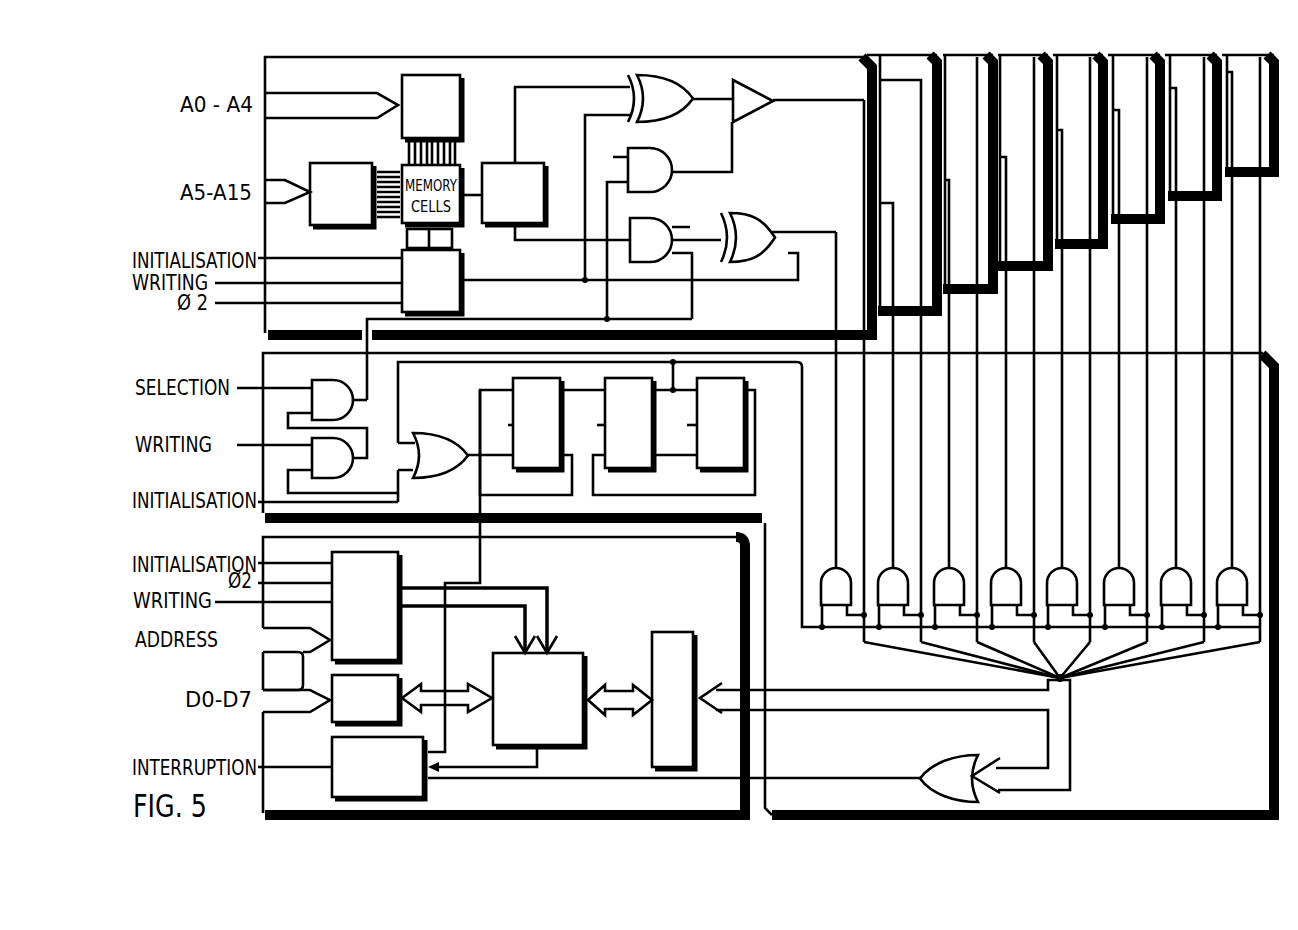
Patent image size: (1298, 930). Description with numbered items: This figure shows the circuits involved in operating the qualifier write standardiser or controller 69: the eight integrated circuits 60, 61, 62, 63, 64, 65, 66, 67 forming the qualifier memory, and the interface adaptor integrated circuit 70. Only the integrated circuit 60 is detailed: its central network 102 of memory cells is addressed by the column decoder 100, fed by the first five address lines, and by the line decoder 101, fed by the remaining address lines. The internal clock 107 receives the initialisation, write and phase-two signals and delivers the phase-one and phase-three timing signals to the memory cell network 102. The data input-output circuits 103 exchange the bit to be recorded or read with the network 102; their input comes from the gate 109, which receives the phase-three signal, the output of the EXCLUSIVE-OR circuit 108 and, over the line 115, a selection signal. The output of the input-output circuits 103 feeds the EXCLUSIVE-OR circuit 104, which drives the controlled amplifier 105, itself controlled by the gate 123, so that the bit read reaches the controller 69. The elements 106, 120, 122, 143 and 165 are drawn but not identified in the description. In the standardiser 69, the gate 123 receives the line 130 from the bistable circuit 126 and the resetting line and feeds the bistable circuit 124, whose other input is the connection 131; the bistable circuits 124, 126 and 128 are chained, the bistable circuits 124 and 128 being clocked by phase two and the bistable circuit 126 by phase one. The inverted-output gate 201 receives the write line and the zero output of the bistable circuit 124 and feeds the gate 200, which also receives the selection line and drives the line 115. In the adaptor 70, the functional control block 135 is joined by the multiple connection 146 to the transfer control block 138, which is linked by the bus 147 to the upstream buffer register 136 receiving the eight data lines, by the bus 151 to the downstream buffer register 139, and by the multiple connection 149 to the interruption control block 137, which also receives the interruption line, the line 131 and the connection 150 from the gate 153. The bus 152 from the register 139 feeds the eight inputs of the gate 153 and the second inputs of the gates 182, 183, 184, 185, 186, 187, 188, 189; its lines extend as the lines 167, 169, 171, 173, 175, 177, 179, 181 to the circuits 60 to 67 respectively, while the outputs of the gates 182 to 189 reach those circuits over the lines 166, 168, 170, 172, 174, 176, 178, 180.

The integrated circuit 60 is at (263, 84).
The integrated circuit 61 is at (902, 303).
The integrated circuit 62 is at (959, 298).
The integrated circuit 63 is at (1014, 274).
The integrated circuit 64 is at (1070, 251).
The integrated circuit 65 is at (1127, 226).
The integrated circuit 66 is at (1184, 203).
The integrated circuit 67 is at (1240, 178).
The qualifier write standardiser 69 is at (260, 368).
The interface adaptor circuit 70 is at (258, 544).
The column decoder 100 is at (462, 88).
The line decoder 101 is at (330, 158).
The network of memory cells 102 is at (463, 236).
The data input-output circuits 103 is at (514, 158).
The EXCLUSIVE-OR circuit 104 is at (707, 80).
The controlled amplifier 105 is at (777, 82).
The AND gate 106 is at (672, 150).
The internal clock 107 is at (462, 305).
The EXCLUSIVE-OR circuit 108 is at (755, 214).
The gate 109 is at (648, 218).
The line 115 is at (517, 319).
The connection line 120 is at (728, 100).
The connection line 122 is at (708, 246).
The gate 123 is at (452, 432).
The bistable circuit 124 is at (545, 478).
The bistable circuit 126 is at (637, 478).
The bistable circuit 128 is at (729, 478).
The line 130 is at (800, 422).
The line 131 is at (474, 481).
The functional control block 135 is at (414, 549).
The upstream buffer register 136 is at (408, 682).
The interruption control block 137 is at (428, 786).
The transfer control block 138 is at (594, 647).
The downstream buffer register 139 is at (650, 650).
The address input 143 is at (301, 662).
The multiple connection 146 is at (540, 570).
The bus 147 is at (452, 687).
The multiple connection 149 is at (482, 764).
The connection 150 is at (606, 776).
The bus 151 is at (608, 688).
The bus 152 is at (842, 717).
The gate 153 is at (944, 756).
The connection line 165 is at (846, 234).
The line 166 is at (836, 435).
The line 167 is at (864, 435).
The line 168 is at (893, 435).
The line 169 is at (921, 435).
The line 170 is at (949, 435).
The line 171 is at (977, 435).
The line 172 is at (1006, 435).
The line 173 is at (1034, 435).
The line 174 is at (1062, 435).
The line 175 is at (1090, 435).
The line 176 is at (1119, 435).
The line 177 is at (1147, 435).
The line 178 is at (1176, 435).
The line 179 is at (1204, 435).
The line 180 is at (1232, 435).
The line 181 is at (1260, 435).
The gate 182 is at (864, 568).
The gate 183 is at (921, 568).
The gate 184 is at (977, 568).
The gate 185 is at (1034, 568).
The gate 186 is at (1090, 568).
The gate 187 is at (1147, 568).
The gate 188 is at (1204, 568).
The gate 189 is at (1260, 568).
The gate 200 is at (357, 405).
The gate having an inverted output 201 is at (365, 468).